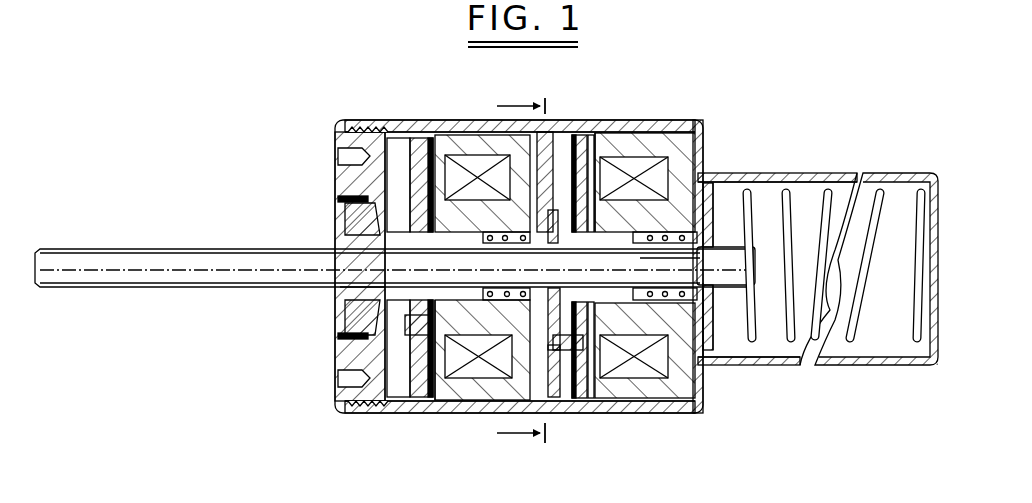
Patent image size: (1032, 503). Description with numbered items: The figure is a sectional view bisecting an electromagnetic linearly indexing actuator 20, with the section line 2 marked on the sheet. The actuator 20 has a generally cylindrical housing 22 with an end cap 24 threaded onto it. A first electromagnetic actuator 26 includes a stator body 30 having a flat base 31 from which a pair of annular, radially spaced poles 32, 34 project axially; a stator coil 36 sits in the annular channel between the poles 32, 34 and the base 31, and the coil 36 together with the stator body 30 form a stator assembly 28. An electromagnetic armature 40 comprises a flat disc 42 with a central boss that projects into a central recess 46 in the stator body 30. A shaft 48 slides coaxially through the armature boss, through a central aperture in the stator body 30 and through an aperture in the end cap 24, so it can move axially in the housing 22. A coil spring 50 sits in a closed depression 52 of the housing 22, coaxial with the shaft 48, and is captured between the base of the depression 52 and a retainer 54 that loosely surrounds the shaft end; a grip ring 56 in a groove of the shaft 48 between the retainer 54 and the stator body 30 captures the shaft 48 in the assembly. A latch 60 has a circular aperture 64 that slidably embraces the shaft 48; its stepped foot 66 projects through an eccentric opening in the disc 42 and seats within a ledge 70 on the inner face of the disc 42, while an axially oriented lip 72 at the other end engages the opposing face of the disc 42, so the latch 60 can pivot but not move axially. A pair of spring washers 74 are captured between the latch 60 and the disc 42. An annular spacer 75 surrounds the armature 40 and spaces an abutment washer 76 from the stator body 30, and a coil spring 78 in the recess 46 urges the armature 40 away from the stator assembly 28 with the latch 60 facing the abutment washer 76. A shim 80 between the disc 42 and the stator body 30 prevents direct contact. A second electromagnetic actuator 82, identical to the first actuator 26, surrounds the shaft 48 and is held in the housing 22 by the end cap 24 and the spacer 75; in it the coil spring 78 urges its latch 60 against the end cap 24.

The electromagnetic linearly indexing actuator 20 is at (740, 66).
The housing 22 is at (628, 120).
The end cap 24 is at (350, 172).
The first electromagnetic actuator 26 is at (668, 118).
The stator assembly 28 is at (672, 128).
The stator body 30 is at (690, 158).
The flat base 31 is at (686, 400).
The pole 32 is at (652, 402).
The pole 34 is at (628, 399).
The stator coil 36 is at (655, 392).
The electromagnetic armature 40 is at (578, 132).
The armature disc 42 is at (396, 130).
The central recess 46 is at (705, 400).
The shaft 48 is at (90, 248).
The coil spring 50 is at (822, 186).
The closed depression 52 is at (872, 368).
The retainer 54 is at (715, 186).
The grip ring 56 is at (715, 318).
The latch 60 is at (348, 340).
The circular aperture 64 is at (335, 286).
The stepped foot 66 is at (560, 400).
The ledge 70 is at (590, 399).
The lip 72 is at (365, 198).
The spring washers 74 is at (372, 228).
The annular spacer 75 is at (395, 408).
The abutment washer 76 is at (500, 405).
The coil spring 78 is at (668, 256).
The shim 80 is at (622, 135).
The second electromagnetic actuator 82 is at (452, 130).
The section line 2- 2 is at (521, 271).